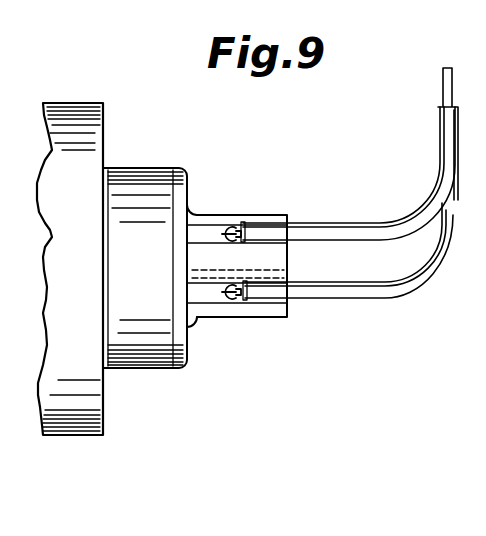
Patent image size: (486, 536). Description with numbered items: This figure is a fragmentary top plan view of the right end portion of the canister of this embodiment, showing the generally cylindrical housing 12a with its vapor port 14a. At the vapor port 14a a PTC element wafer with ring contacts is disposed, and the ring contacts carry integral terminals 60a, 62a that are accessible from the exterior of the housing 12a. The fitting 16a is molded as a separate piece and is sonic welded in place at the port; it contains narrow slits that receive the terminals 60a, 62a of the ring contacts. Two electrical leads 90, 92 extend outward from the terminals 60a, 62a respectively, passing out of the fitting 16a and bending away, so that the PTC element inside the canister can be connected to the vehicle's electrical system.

The housing 12a is at (68, 123).
The vapor port 14a is at (202, 167).
The fitting 16a is at (272, 318).
The terminal 60a is at (213, 232).
The terminal 62a is at (212, 298).
The electrical lead 90 is at (348, 233).
The electrical lead 92 is at (338, 300).